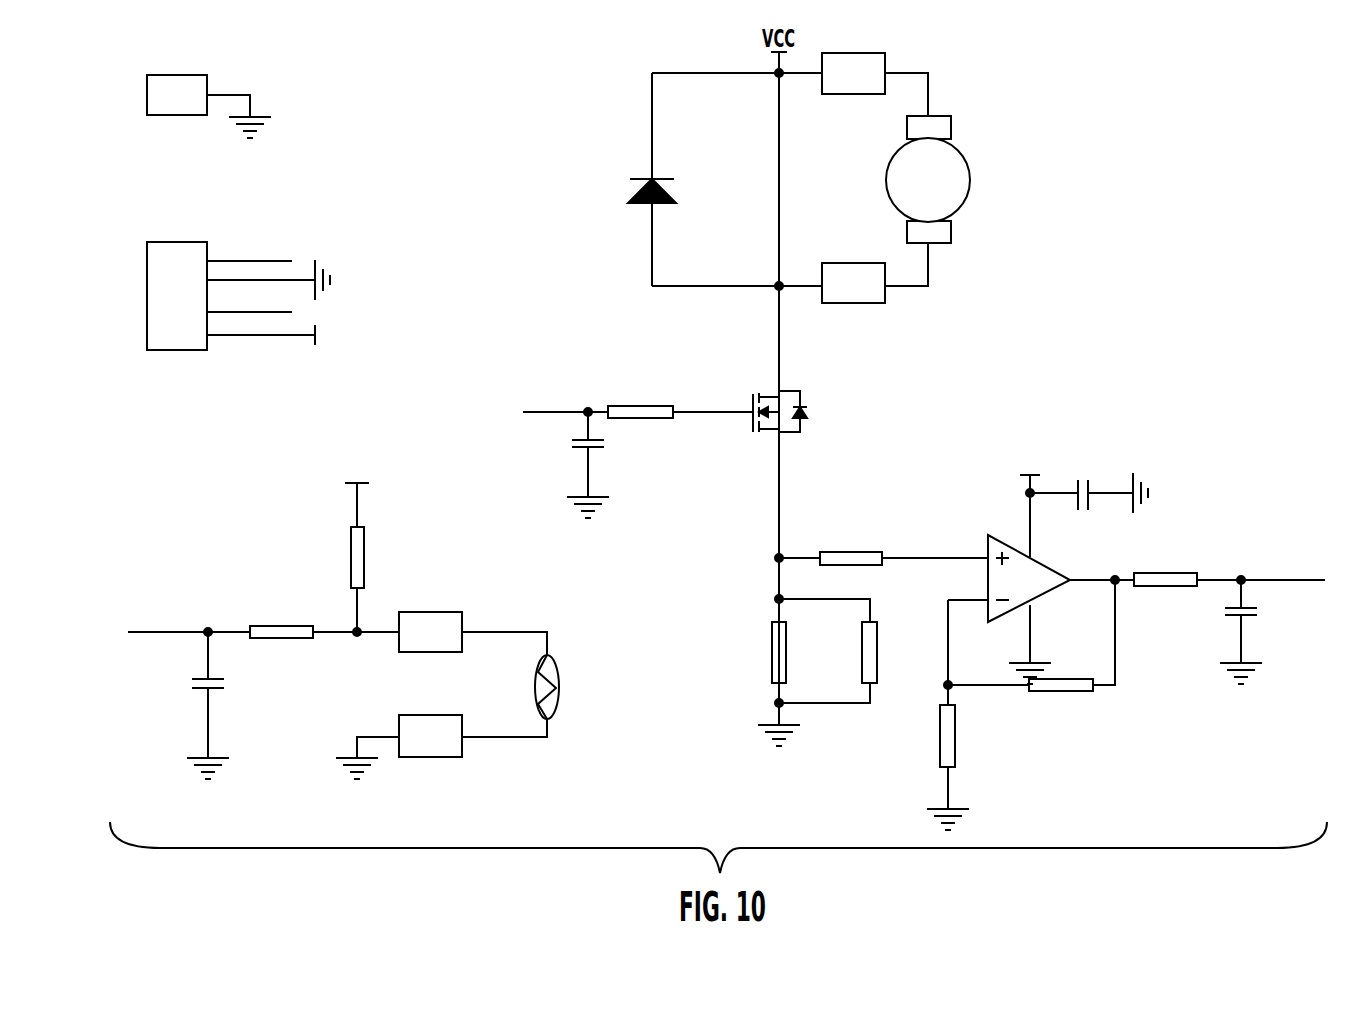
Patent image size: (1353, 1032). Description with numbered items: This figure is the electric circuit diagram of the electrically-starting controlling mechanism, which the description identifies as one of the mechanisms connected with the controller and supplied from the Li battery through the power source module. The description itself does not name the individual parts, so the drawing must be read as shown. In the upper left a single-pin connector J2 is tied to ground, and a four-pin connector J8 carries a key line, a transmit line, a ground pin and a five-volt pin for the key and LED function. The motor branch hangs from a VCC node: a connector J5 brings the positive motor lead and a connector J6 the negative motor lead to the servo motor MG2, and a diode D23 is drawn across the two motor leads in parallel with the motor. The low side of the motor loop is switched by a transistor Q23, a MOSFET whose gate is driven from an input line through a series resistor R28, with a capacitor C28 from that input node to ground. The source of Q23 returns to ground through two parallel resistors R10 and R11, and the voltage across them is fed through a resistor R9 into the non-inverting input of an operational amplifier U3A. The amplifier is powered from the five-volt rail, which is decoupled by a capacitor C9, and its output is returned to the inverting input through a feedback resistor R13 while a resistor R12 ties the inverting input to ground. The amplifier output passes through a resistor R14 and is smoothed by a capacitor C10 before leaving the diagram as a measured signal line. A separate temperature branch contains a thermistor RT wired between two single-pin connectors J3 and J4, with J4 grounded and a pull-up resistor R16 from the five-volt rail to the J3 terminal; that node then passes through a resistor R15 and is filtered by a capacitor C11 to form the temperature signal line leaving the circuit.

The GND connector J2 is at (207, 98).
The KEY/LED connector J8 is at (244, 298).
The M+ motor connector J5 is at (852, 75).
The M- motor connector J6 is at (852, 284).
The diode ES3D D23 is at (666, 196).
The motor servo MG2 is at (989, 179).
The resistor 100R R28 is at (636, 414).
The capacitor 104 C28 is at (605, 465).
The MOSFET VS40280AT Q23 is at (835, 417).
The resistor 10K R9 is at (881, 559).
The resistor 2ohm R10 is at (799, 670).
The resistor 2ohm R11 is at (854, 651).
The operational amplifier MB358 U3A is at (1040, 564).
The capacitor 104 C9 is at (1089, 487).
The resistor 300K R13 is at (1029, 651).
The resistor 10K R12 is at (961, 757).
The resistor 1K R14 is at (1230, 579).
The capacitor 104 C10 is at (1257, 632).
The resistor 1K R15 is at (260, 632).
The capacitor 104 C11 is at (226, 705).
The resistor 10K R16 is at (370, 542).
The NTC1 connector J3 is at (472, 633).
The NTC2 connector J4 is at (441, 737).
The thermistor RT is at (558, 687).